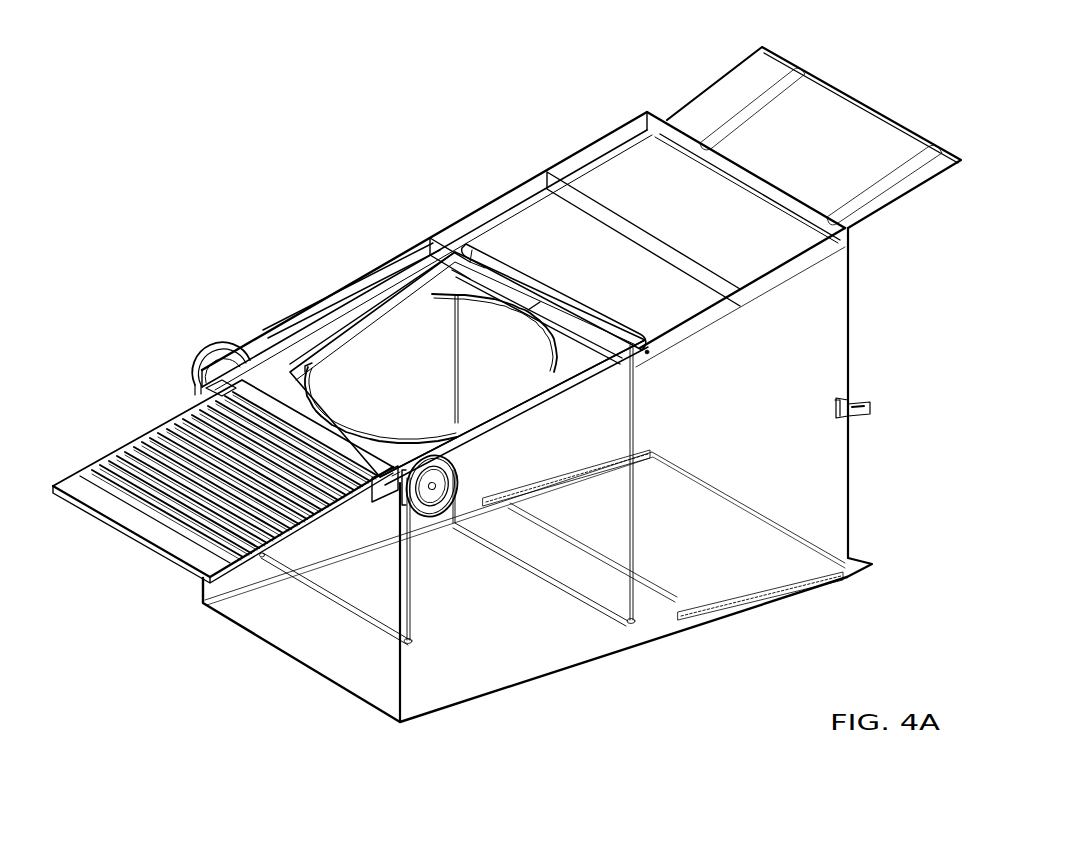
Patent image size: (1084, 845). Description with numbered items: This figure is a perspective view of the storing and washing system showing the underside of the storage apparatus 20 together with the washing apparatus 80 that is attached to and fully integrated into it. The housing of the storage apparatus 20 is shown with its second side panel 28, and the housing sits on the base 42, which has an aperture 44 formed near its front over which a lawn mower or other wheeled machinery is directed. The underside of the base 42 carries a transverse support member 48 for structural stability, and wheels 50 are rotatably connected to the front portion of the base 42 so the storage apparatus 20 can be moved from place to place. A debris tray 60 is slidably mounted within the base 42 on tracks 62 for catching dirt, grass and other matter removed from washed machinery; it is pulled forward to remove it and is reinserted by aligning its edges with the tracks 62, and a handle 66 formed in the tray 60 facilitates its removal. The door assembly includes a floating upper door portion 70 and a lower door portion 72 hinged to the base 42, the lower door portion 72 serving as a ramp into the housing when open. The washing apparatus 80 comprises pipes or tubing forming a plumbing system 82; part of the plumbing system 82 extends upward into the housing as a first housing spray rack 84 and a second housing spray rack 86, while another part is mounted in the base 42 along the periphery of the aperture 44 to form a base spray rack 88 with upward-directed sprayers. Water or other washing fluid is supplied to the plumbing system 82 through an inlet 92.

The storage apparatus 20 is at (628, 662).
The second side panel 28 is at (821, 350).
The base 42 is at (681, 213).
The aperture 44 is at (296, 378).
The transverse support member 48 is at (447, 242).
The wheels 50 is at (205, 355).
The debris tray 60 is at (124, 444).
The tracks 62 is at (350, 318).
The handle 66 is at (100, 520).
The upper door portion 70 is at (862, 562).
The lower door portion 72 is at (806, 152).
The washing apparatus 80 is at (505, 246).
The plumbing system 82 is at (604, 307).
The first housing spray rack 84 is at (355, 610).
The second housing spray rack 86 is at (575, 594).
The base spray rack 88 is at (540, 341).
The inlet 92 is at (650, 354).